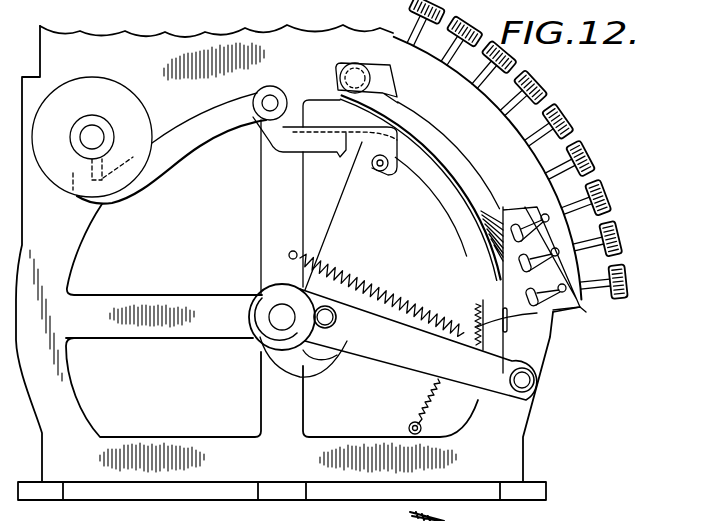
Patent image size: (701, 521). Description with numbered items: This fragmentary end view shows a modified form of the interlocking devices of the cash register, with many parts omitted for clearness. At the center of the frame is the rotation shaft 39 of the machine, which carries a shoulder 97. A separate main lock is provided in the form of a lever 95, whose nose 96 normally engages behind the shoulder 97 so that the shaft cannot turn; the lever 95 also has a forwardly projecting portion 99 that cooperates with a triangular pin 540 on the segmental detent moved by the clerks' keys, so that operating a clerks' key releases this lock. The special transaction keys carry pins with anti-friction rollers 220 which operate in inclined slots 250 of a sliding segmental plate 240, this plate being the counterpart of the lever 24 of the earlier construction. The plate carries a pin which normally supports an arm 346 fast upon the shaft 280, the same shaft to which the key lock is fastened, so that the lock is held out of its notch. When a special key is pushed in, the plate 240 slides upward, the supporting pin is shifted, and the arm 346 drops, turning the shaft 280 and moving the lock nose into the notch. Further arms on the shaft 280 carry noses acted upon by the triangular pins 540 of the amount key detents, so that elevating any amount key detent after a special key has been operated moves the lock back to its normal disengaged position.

The rotation shaft 39 is at (92, 128).
The lever 95 is at (183, 137).
The nose 96 is at (80, 180).
The shoulder 97 is at (118, 150).
The forwardly projecting portion 99 is at (265, 168).
The shaft 280 is at (270, 95).
The triangular pin 540 is at (328, 95).
The arm 346 is at (343, 132).
The anti-friction roller 220 is at (443, 183).
The sliding segmental plate 240 is at (540, 220).
The inclined slots 250 is at (552, 256).
The lever 24 is at (583, 304).